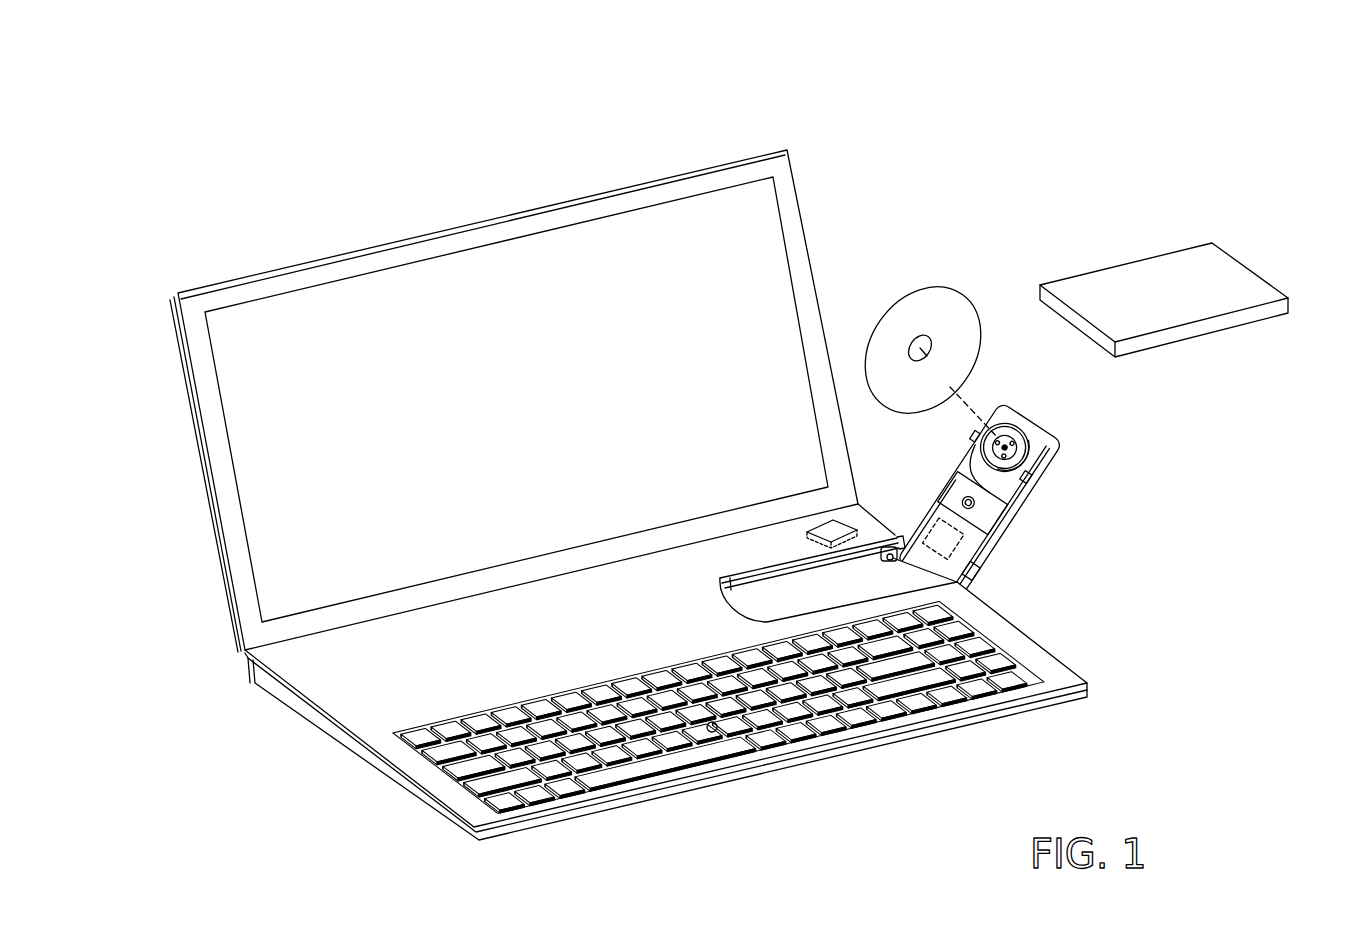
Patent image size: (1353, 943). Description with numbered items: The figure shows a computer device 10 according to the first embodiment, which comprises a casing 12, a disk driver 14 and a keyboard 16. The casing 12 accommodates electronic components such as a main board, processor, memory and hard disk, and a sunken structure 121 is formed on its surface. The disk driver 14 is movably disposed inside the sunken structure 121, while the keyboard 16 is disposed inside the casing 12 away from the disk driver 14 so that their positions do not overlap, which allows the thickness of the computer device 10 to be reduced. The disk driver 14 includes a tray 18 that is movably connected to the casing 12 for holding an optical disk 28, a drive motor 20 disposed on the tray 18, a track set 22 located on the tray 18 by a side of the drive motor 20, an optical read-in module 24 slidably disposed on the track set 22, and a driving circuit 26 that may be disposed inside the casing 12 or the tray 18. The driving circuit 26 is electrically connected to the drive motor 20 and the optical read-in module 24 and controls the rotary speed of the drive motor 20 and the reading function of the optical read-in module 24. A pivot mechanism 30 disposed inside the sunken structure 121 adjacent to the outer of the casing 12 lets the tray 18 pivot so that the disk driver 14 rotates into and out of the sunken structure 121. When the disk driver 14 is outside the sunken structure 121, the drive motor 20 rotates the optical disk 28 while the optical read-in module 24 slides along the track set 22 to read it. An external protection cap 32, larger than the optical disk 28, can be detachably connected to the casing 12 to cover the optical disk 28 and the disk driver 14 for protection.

The computer device 10 is at (698, 456).
The casing 12 is at (666, 654).
The sunken structure 121 is at (865, 575).
The disk driver 14 is at (1030, 514).
The keyboard 16 is at (933, 680).
The tray 18 is at (976, 502).
The drive motor 20 is at (1004, 447).
The track set 22 is at (943, 539).
The optical read-in module 24 is at (973, 503).
The driving circuit 26 is at (823, 522).
The optical disk 28 is at (932, 300).
The pivot mechanism 30 is at (998, 521).
The external protection cap 32 is at (1230, 283).